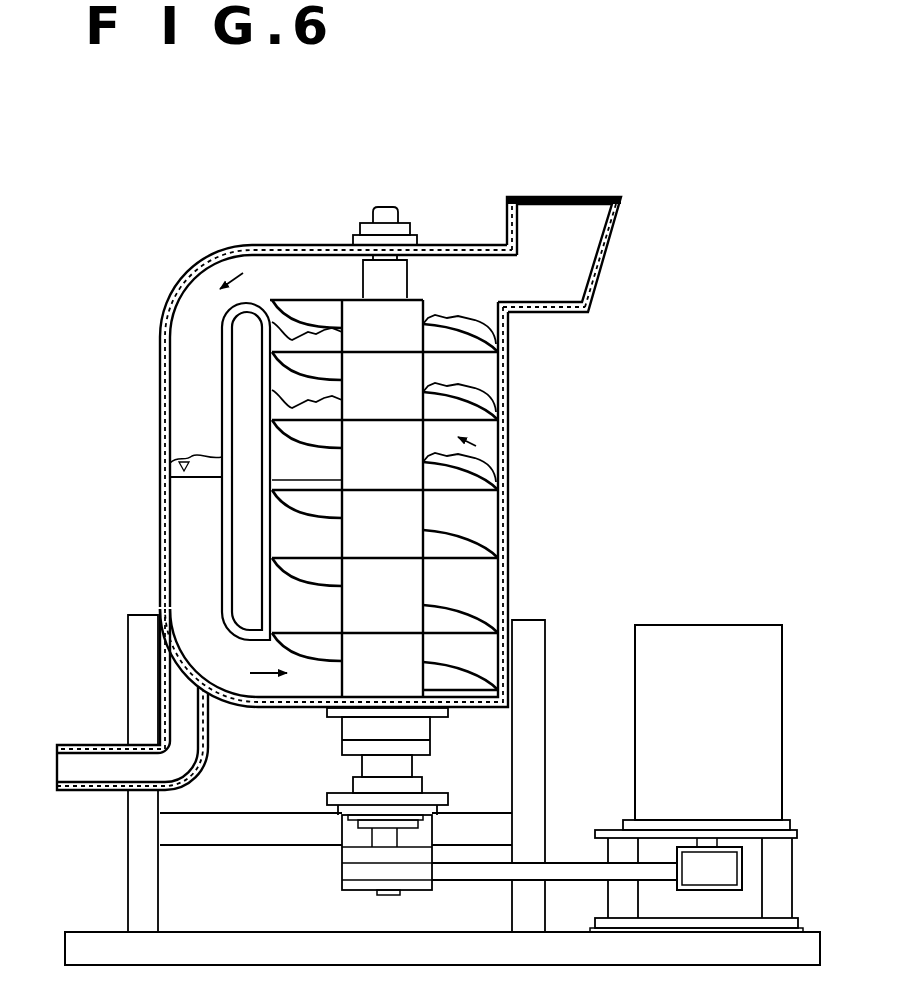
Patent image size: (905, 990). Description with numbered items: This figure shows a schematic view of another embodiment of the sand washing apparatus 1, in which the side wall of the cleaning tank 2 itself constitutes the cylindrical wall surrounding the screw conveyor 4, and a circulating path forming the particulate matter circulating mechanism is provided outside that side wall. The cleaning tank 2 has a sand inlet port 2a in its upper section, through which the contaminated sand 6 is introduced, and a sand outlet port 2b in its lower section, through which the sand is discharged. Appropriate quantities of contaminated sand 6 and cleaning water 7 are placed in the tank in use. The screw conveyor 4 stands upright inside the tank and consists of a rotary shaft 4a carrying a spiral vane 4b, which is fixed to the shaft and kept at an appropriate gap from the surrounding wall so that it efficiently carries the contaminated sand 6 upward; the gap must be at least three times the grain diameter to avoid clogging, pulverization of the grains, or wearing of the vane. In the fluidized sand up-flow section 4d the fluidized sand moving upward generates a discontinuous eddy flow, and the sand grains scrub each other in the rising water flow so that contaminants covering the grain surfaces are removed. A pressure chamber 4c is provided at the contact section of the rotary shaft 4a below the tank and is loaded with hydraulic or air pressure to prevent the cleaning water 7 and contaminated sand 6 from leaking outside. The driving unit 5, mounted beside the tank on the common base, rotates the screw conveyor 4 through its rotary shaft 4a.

The sand washing apparatus 1 is at (115, 438).
The cleaning tank 2 is at (510, 490).
The sand inlet port 2a is at (613, 228).
The sand outlet port 2b is at (78, 790).
The screw conveyor 4 is at (335, 452).
The rotary shaft 4a is at (498, 378).
The spiral vane 4b is at (468, 568).
The pressure chamber 4c is at (432, 730).
The fluidized sand up-flow section 4d is at (292, 330).
The driving unit 5 is at (786, 736).
The contaminated sand 6 is at (190, 603).
The cleaning water 7 is at (160, 462).